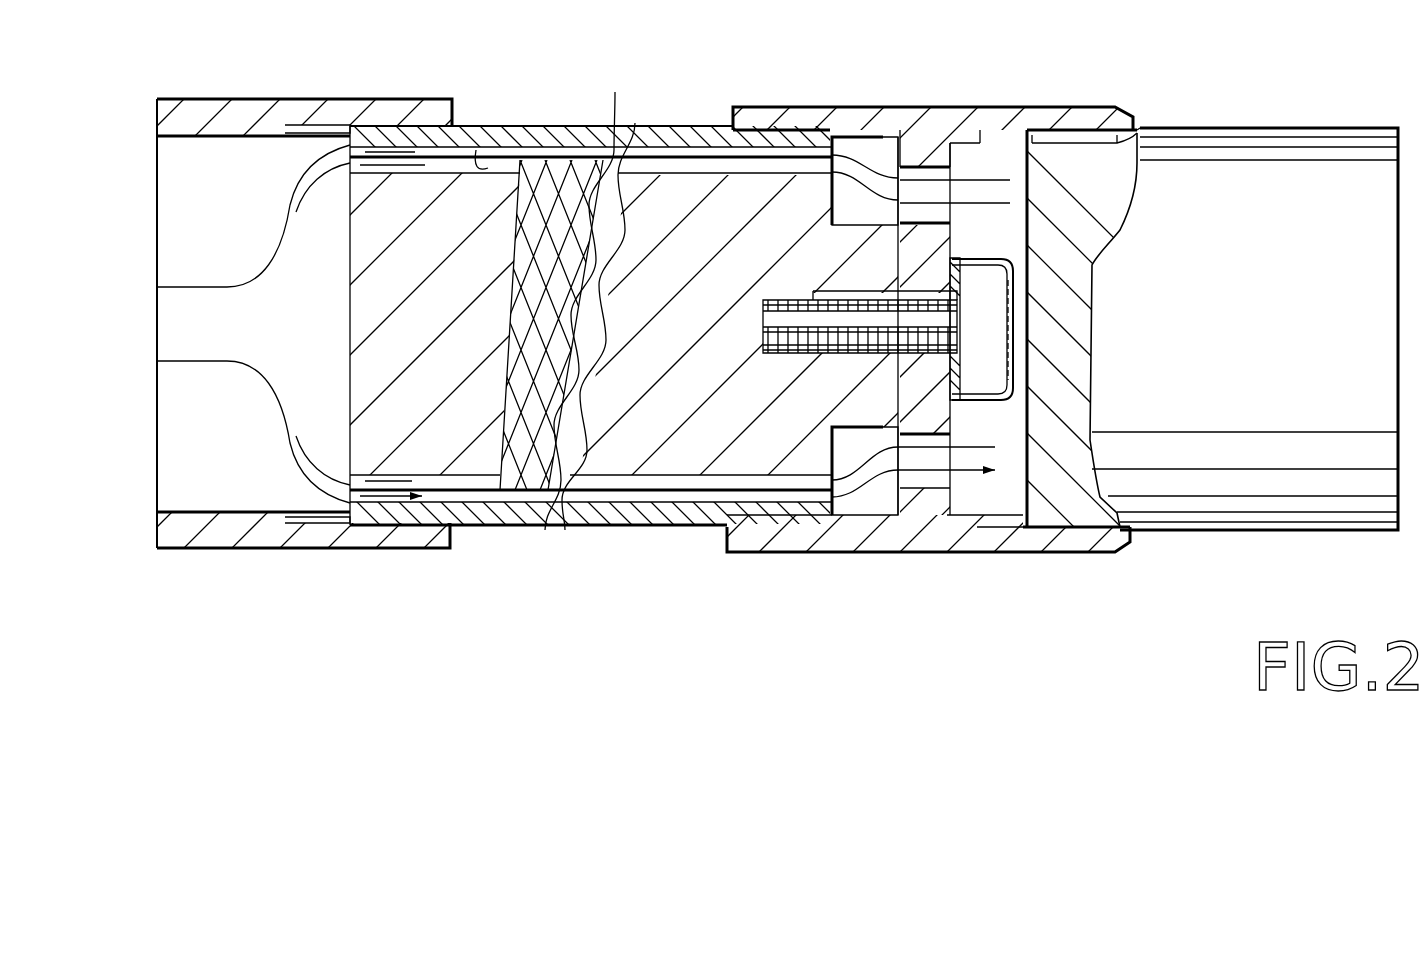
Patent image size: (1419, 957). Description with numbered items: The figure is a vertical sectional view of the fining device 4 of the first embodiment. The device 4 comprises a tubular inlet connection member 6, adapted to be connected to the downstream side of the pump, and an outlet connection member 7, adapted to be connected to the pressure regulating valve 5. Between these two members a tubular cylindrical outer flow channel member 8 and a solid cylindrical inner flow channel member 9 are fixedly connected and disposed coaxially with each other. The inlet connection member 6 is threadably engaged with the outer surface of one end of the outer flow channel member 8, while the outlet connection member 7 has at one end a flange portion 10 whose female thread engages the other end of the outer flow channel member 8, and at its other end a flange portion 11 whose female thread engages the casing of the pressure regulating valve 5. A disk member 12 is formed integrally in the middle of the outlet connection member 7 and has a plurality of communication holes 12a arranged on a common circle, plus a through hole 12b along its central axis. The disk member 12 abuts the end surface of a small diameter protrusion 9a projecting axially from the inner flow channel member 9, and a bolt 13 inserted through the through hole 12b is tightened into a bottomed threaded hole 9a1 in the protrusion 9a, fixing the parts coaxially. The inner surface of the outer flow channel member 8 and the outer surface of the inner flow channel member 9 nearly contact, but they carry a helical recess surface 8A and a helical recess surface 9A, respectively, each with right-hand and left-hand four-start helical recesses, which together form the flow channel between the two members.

The fining device 4 is at (451, 90).
The pressure regulating valve 5 is at (1265, 145).
The tubular inlet connection member 6 is at (250, 122).
The outlet connection member 7 is at (906, 124).
The tubular cylindrical outer flow channel member 8 is at (533, 137).
The helical recess surface 8A is at (492, 160).
The solid cylindrical inner flow channel member 9 is at (570, 197).
The helical recess surface 9A is at (352, 258).
The small diameter protrusion 9a is at (868, 265).
The threaded hole 9a1 is at (850, 356).
The flange portion 10 is at (785, 107).
The flange portion 11 is at (1082, 107).
The disk member 12 is at (947, 410).
The communication holes 12a is at (930, 150).
The through hole 12b is at (920, 360).
The bolt 13 is at (1005, 362).